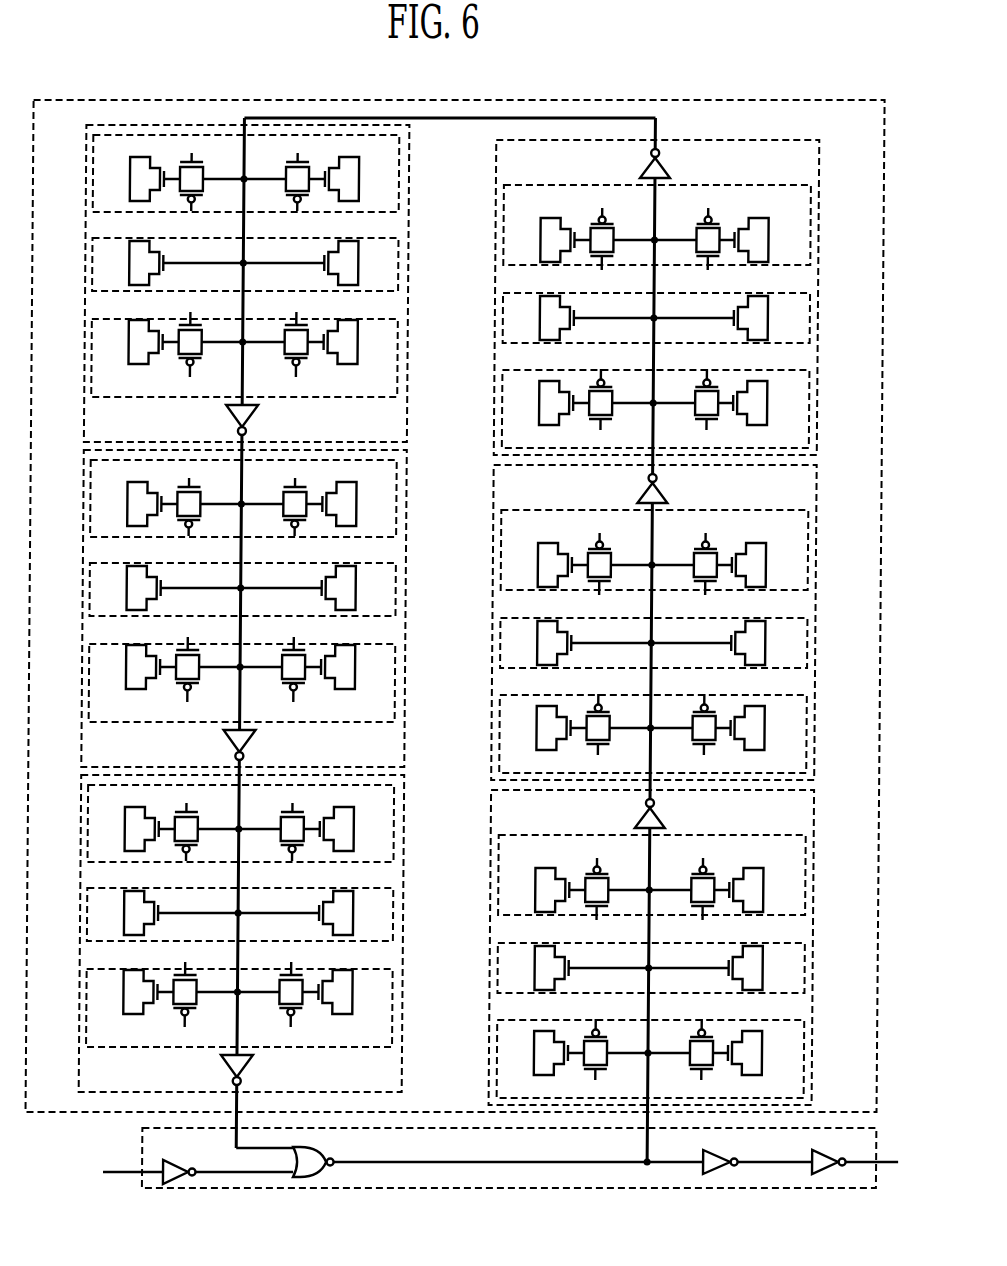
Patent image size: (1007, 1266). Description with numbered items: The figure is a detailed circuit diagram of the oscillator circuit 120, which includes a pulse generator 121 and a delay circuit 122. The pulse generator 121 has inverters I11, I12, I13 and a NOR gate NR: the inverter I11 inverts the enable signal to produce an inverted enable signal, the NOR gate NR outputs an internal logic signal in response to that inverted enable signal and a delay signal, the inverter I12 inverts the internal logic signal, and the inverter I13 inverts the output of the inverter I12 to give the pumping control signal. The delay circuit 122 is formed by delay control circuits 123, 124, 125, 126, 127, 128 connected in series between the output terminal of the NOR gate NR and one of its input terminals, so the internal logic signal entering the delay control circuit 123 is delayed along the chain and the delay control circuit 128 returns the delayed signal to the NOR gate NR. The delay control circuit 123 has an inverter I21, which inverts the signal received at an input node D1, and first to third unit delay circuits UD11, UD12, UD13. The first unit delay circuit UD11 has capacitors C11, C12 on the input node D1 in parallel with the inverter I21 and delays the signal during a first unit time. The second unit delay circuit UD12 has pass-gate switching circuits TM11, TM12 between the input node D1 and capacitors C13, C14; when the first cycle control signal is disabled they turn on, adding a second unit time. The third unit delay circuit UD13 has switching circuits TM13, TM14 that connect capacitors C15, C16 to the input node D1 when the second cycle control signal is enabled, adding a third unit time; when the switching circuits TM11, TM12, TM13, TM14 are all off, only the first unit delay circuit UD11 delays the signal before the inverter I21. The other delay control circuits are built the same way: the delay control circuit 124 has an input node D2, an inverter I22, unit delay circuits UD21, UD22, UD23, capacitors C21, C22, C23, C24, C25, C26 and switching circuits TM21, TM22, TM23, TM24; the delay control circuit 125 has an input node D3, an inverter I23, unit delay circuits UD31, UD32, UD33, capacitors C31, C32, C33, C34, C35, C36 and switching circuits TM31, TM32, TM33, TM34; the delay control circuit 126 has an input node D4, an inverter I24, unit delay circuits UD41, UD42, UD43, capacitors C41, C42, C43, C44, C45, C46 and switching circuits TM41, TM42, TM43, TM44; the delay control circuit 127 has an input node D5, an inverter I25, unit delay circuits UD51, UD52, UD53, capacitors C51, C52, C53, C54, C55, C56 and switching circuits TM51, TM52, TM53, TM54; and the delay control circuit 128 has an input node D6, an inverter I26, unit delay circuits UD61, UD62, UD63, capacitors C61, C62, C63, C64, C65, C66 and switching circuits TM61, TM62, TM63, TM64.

The oscillator circuit 120 is at (850, 91).
The pulse generator 121 is at (884, 1141).
The delay circuit 122 is at (884, 167).
The delay control circuit 123 is at (647, 947).
The delay control circuit 124 is at (650, 622).
The delay control circuit 125 is at (818, 155).
The delay control circuit 126 is at (85, 172).
The delay control circuit 127 is at (246, 608).
The delay control circuit 128 is at (243, 933).
The inverter I11 is at (186, 1166).
The inverter I12 is at (728, 1156).
The inverter I13 is at (837, 1156).
The inverter I21 is at (665, 813).
The inverter I22 is at (667, 488).
The inverter I23 is at (670, 163).
The inverter I24 is at (256, 422).
The inverter I25 is at (253, 747).
The inverter I26 is at (251, 1072).
The NOR gate NR is at (329, 1143).
The input node D1 is at (664, 1064).
The input node D2 is at (667, 739).
The input node D3 is at (669, 413).
The input node D4 is at (261, 171).
The input node D5 is at (259, 496).
The input node D6 is at (256, 821).
The first unit delay circuit UD11 is at (618, 968).
The second unit delay circuit UD12 is at (617, 1050).
The third unit delay circuit UD13 is at (618, 887).
The first unit delay circuit UD21 is at (621, 643).
The second unit delay circuit UD22 is at (620, 725).
The third unit delay circuit UD23 is at (621, 562).
The first unit delay circuit UD31 is at (623, 318).
The second unit delay circuit UD32 is at (622, 400).
The third unit delay circuit UD33 is at (624, 237).
The first unit delay circuit UD41 is at (277, 264).
The second unit delay circuit UD42 is at (278, 185).
The third unit delay circuit UD43 is at (276, 346).
The first unit delay circuit UD51 is at (274, 589).
The second unit delay circuit UD52 is at (275, 510).
The third unit delay circuit UD53 is at (274, 671).
The first unit delay circuit UD61 is at (272, 914).
The second unit delay circuit UD62 is at (272, 835).
The third unit delay circuit UD63 is at (271, 996).
The capacitor C11 is at (575, 968).
The capacitor C12 is at (722, 968).
The capacitor C13 is at (542, 1053).
The capacitor C14 is at (754, 1053).
The capacitor C15 is at (543, 890).
The capacitor C16 is at (755, 890).
The capacitor C21 is at (577, 643).
The capacitor C22 is at (725, 643).
The capacitor C23 is at (545, 728).
The capacitor C24 is at (756, 728).
The capacitor C25 is at (546, 565).
The capacitor C26 is at (758, 565).
The capacitor C31 is at (580, 318).
The capacitor C32 is at (728, 318).
The capacitor C33 is at (547, 403).
The capacitor C34 is at (759, 403).
The capacitor C35 is at (549, 240).
The capacitor C36 is at (760, 240).
The capacitor C41 is at (169, 263).
The capacitor C42 is at (317, 263).
The capacitor C43 is at (138, 179).
The capacitor C44 is at (351, 179).
The capacitor C45 is at (137, 342).
The capacitor C46 is at (349, 342).
The capacitor C51 is at (167, 588).
The capacitor C52 is at (315, 588).
The capacitor C53 is at (135, 504).
The capacitor C54 is at (348, 504).
The capacitor C55 is at (134, 667).
The capacitor C56 is at (347, 667).
The capacitor C61 is at (164, 913).
The capacitor C62 is at (312, 913).
The capacitor C63 is at (133, 829).
The capacitor C64 is at (346, 829).
The capacitor C65 is at (132, 992).
The capacitor C66 is at (344, 992).
The switching circuit TM11 is at (610, 1050).
The switching circuit TM12 is at (686, 1050).
The switching circuit TM13 is at (612, 892).
The switching circuit TM14 is at (686, 892).
The switching circuit TM21 is at (613, 725).
The switching circuit TM22 is at (688, 725).
The switching circuit TM23 is at (615, 567).
The switching circuit TM24 is at (689, 567).
The switching circuit TM31 is at (615, 400).
The switching circuit TM32 is at (691, 400).
The switching circuit TM33 is at (618, 242).
The switching circuit TM34 is at (691, 242).
The switching circuit TM41 is at (206, 186).
The switching circuit TM42 is at (282, 186).
The switching circuit TM43 is at (206, 345).
The switching circuit TM44 is at (279, 345).
The switching circuit TM51 is at (203, 511).
The switching circuit TM52 is at (279, 511).
The switching circuit TM53 is at (203, 670).
The switching circuit TM54 is at (277, 670).
The switching circuit TM61 is at (201, 836).
The switching circuit TM62 is at (276, 836).
The switching circuit TM63 is at (200, 995).
The switching circuit TM64 is at (274, 995).